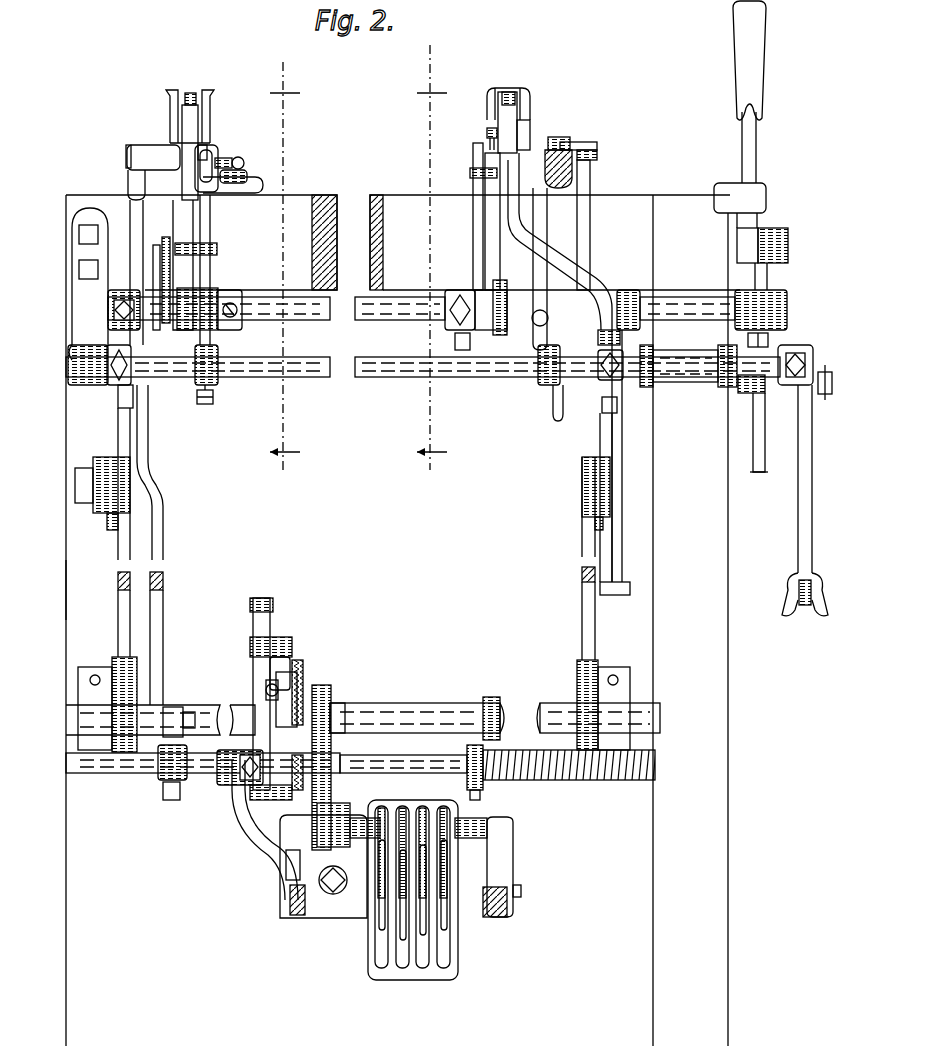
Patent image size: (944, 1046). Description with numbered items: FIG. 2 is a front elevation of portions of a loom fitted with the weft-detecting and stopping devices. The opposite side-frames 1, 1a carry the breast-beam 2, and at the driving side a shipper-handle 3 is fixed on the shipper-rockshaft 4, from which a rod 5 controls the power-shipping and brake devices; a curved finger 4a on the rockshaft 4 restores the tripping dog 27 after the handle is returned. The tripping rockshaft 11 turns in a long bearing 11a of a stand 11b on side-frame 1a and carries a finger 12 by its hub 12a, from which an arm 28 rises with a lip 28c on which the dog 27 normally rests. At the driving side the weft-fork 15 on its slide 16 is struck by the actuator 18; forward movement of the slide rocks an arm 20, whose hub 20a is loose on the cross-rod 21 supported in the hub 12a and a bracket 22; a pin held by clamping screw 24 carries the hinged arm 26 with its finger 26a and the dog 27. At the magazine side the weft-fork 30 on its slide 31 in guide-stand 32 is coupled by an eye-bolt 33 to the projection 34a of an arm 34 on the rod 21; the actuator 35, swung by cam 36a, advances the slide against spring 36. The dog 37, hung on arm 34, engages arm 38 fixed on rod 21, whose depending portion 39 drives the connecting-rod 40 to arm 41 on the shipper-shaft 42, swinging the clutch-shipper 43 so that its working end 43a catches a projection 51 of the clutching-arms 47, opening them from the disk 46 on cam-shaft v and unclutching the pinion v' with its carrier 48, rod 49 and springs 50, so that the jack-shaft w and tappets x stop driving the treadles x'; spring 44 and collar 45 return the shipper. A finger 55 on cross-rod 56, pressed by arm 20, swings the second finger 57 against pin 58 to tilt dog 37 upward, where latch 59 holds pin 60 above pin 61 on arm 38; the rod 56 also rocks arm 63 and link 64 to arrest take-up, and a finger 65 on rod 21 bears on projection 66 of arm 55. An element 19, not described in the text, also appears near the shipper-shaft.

The side-frame 1 is at (722, 582).
The side-frame 1a is at (68, 592).
The breast-beam 2 is at (292, 194).
The shipper-handle 3 is at (765, 89).
The shipper-rockshaft 4 is at (432, 264).
The curved finger 4a is at (551, 405).
The rod 5 is at (810, 289).
The tripping rockshaft 11 is at (790, 314).
The long bearing 11a is at (686, 297).
The stand 11b is at (701, 386).
The finger 12 is at (624, 441).
The hub or sleeve 12a is at (623, 288).
The weft-fork 15 is at (513, 90).
The carrying slide 16 is at (531, 138).
The actuator 18 is at (514, 131).
The block 19 is at (576, 680).
The arm 20 is at (507, 268).
The hub 20a is at (509, 331).
The cross-rod or shaft 21 is at (290, 297).
The bracket 22 is at (101, 284).
The clamping screw 24 is at (486, 134).
The hinged arm 26 is at (563, 136).
The finger 26a is at (549, 232).
The tripping dog 27 is at (593, 145).
The arm 28 is at (592, 170).
The lip 28c is at (599, 155).
The weft-detector 30 is at (194, 94).
The carrying-slide 31 is at (207, 122).
The guide-stand 32 is at (219, 160).
The eye-bolt 33 is at (204, 180).
The arm 34 is at (263, 171).
The projection 34a is at (224, 131).
The actuator 35 is at (180, 140).
The contracting spiral spring 36 is at (246, 163).
The actuating cam 36a is at (113, 660).
The dog 37 is at (141, 147).
The arm 38 is at (135, 225).
The depending portion 39 is at (131, 397).
The connecting-rod 40 is at (165, 531).
The arm 41 is at (177, 705).
The shipper-shaft 42 is at (133, 777).
The clutch-shipper 43 is at (251, 668).
The working end 43a is at (250, 612).
The torsional spiral spring 44 is at (569, 782).
The collar 45 is at (465, 746).
The disk 46 is at (291, 689).
The clutching-arms 47 is at (281, 655).
The carrier 48 is at (319, 689).
The rod 49 is at (263, 690).
The contracting spiral springs 50 is at (300, 660).
The lateral projections 51 is at (249, 645).
The finger 55 is at (586, 268).
The cross-rod or shaft 56 is at (303, 378).
The second finger 57 is at (213, 277).
The pin 58 is at (220, 249).
The latch 59 is at (155, 250).
The pin 60 is at (152, 332).
The pin or projection 61 is at (196, 397).
The arm 63 is at (805, 393).
The link 64 is at (812, 463).
The finger 65 is at (472, 222).
The projection 66 is at (469, 172).
The cam-shaft v is at (363, 708).
The spur-pinion v' is at (352, 698).
The jack-shaft w is at (311, 781).
The shed-forming tappets or cams x is at (413, 886).
The treadles or levers x' is at (429, 921).